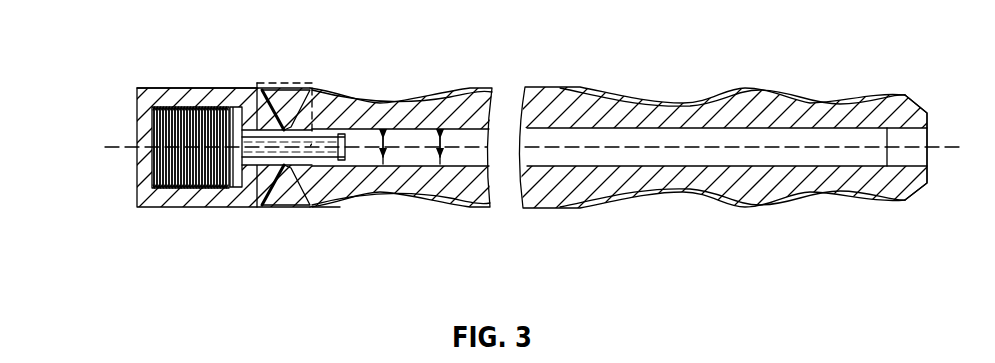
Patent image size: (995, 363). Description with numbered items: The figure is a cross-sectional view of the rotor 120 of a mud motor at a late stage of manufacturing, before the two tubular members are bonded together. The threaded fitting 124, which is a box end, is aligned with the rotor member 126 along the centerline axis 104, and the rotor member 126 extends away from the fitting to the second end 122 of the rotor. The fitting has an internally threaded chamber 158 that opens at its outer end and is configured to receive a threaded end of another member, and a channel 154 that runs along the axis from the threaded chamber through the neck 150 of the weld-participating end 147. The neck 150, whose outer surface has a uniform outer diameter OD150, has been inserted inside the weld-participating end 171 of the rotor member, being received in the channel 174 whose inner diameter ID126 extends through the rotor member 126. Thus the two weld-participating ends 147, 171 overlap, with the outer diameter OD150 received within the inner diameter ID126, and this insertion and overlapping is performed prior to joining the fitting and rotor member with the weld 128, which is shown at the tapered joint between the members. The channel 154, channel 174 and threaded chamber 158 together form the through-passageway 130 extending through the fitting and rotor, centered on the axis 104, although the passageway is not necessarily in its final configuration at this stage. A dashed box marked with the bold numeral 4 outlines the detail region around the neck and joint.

The centerline axis 104 is at (128, 147).
The rotor 120 is at (167, 88).
The second end 122 is at (900, 103).
The threaded fitting 124 is at (227, 88).
The rotor member 126 is at (438, 110).
The weld 128 is at (290, 193).
The through-passageway 130 is at (497, 150).
The weld-participating end 147 is at (260, 160).
The neck 150 is at (323, 88).
The channel 154 is at (237, 192).
The internally threaded chamber 158 is at (160, 117).
The weld-participating end 171 is at (332, 190).
The channel 174 is at (693, 134).
The detail region of FIG. 4 is at (273, 82).
The inner diameter ID126 is at (445, 142).
The outer diameter OD150 is at (387, 148).